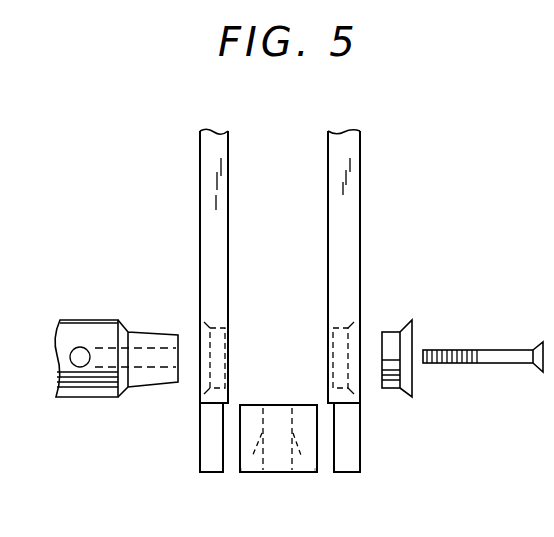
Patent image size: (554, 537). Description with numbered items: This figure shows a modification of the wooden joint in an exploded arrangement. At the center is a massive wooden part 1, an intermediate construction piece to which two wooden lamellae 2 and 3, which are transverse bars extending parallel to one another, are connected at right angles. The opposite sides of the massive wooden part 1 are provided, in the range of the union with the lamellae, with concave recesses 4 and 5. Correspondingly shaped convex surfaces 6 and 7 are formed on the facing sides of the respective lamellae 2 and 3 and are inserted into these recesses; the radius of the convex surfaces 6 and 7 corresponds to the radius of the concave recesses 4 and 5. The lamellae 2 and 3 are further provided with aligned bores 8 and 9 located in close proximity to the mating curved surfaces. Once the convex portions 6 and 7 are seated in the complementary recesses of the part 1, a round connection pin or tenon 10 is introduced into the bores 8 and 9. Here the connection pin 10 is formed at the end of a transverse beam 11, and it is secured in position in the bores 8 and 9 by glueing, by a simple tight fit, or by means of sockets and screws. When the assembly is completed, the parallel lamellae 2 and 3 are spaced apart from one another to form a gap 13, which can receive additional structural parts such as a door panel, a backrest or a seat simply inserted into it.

The massive wooden part 1 is at (278, 462).
The wooden lamella 2 is at (210, 245).
The wooden lamella 3 is at (350, 242).
The concave recess 4 is at (250, 474).
The concave recess 5 is at (298, 481).
The convex surface 6 is at (222, 438).
The convex surface 7 is at (335, 445).
The bore 8 is at (222, 357).
The bore 9 is at (333, 353).
The connection pin 10 is at (160, 377).
The transverse beam 11 is at (75, 342).
The gap 13 is at (268, 138).